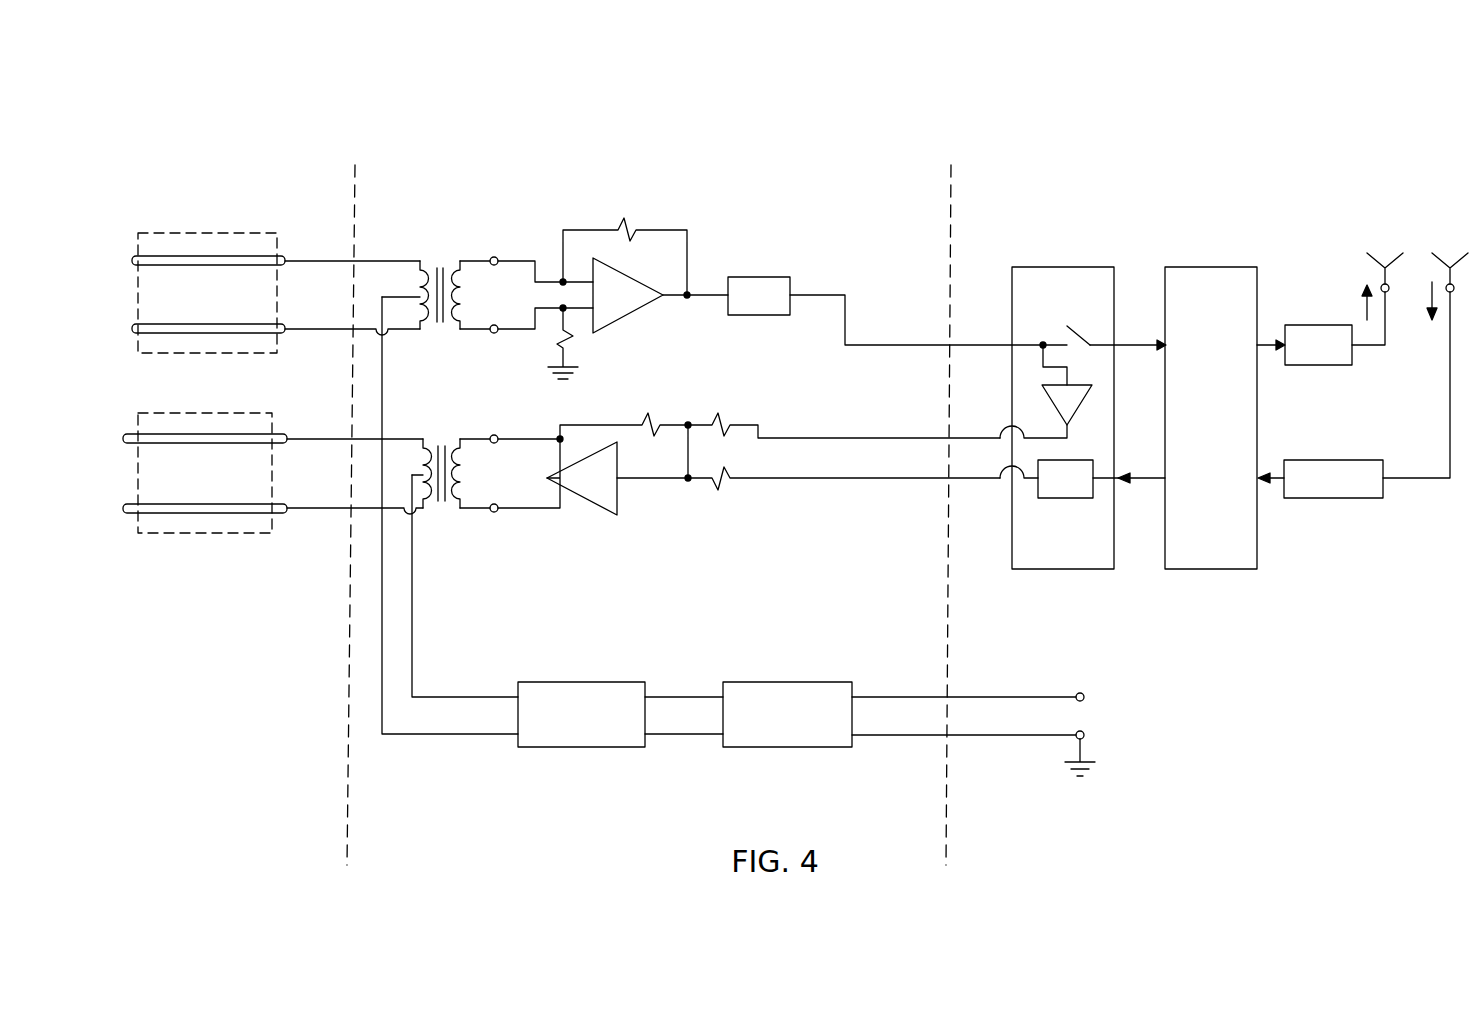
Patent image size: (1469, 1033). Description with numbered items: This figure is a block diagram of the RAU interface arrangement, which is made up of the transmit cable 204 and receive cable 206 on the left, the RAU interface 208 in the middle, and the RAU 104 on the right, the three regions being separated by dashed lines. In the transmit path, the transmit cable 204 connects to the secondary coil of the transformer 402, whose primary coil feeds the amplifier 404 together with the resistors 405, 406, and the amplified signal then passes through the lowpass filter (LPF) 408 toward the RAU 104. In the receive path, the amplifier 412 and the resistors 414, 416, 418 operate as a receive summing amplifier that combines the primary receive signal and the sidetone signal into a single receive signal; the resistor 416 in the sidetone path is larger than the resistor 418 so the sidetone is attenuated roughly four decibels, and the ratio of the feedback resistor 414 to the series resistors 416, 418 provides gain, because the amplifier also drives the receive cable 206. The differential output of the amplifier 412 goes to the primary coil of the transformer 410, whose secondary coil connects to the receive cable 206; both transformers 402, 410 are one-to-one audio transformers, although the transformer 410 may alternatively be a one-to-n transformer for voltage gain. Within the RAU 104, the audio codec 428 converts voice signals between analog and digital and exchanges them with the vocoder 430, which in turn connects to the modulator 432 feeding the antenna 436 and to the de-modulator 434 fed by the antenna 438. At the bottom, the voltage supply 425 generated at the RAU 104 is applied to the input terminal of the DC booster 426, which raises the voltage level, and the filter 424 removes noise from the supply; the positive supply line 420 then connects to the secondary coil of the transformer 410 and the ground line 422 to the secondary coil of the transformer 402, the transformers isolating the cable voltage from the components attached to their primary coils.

The RAU 104 is at (1187, 283).
The transmit cable 204 is at (185, 233).
The receive cable 206 is at (185, 413).
The RAU interface 208 is at (547, 137).
The transformer 402 is at (438, 252).
The amplifier 404 is at (614, 322).
The resistor 405 is at (556, 350).
The resistor 406 is at (627, 222).
The lowpass filter 408 is at (762, 277).
The transformer 410 is at (443, 437).
The amplifier 412 is at (612, 516).
The feedback resistor 414 is at (650, 418).
The resistor 416 is at (722, 418).
The resistor 418 is at (722, 492).
The positive supply line 420 is at (430, 697).
The ground line 422 is at (430, 736).
The filter 424 is at (597, 682).
The voltage supply 425 is at (1146, 722).
The DC booster 426 is at (808, 682).
The audio codec 428 is at (1062, 267).
The vocoder 430 is at (1216, 267).
The modulator 432 is at (1318, 365).
The de-modulator 434 is at (1340, 498).
The antenna 436 is at (1383, 246).
The antenna 438 is at (1453, 246).